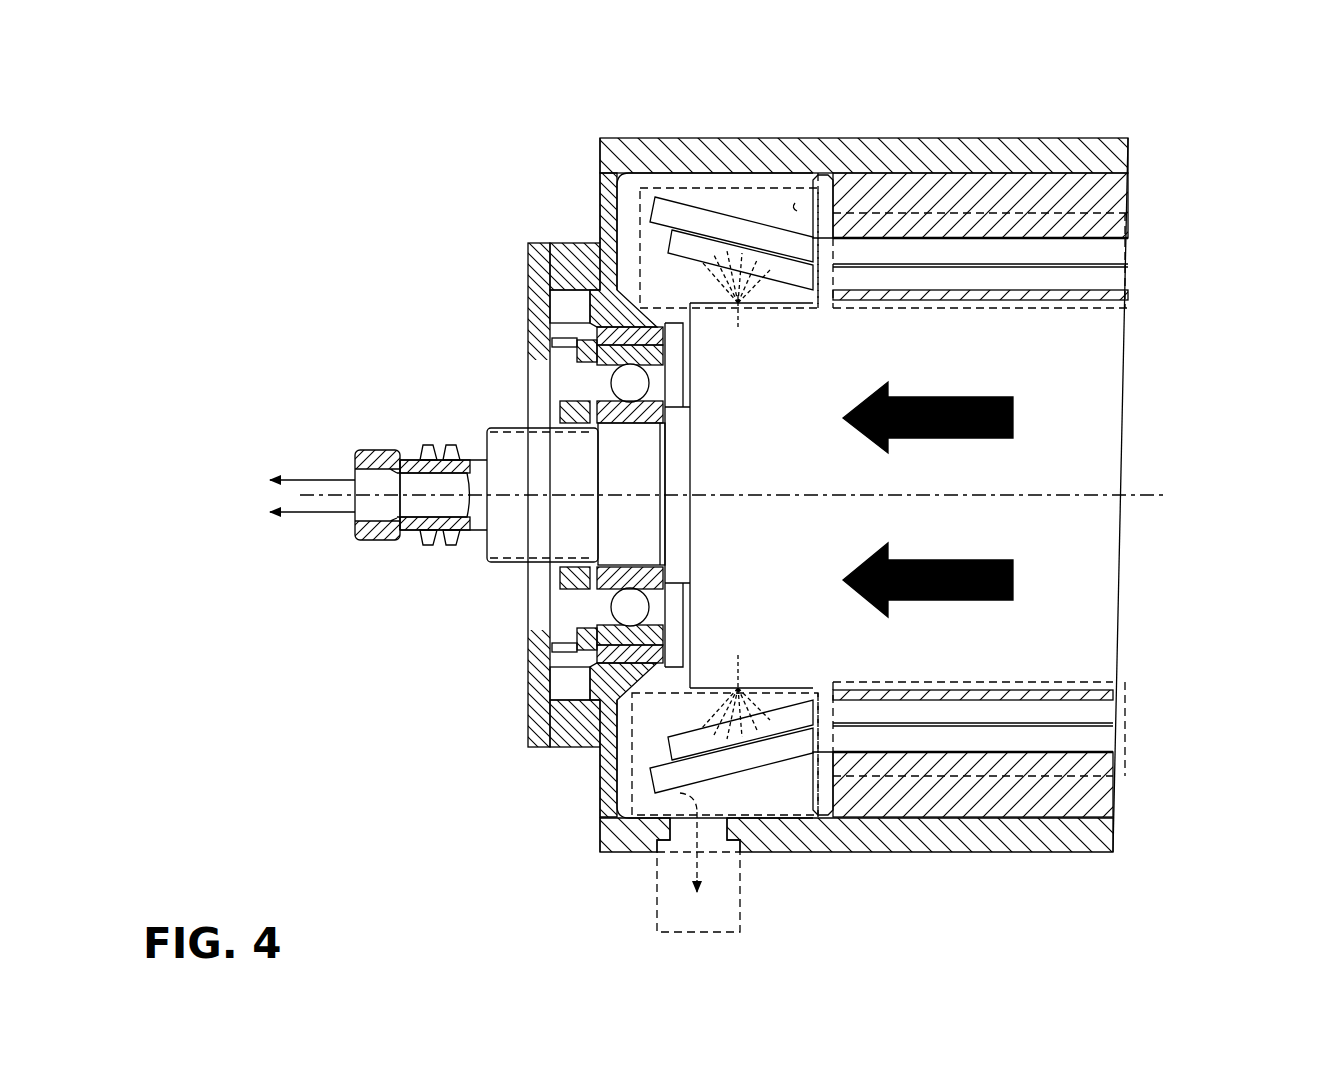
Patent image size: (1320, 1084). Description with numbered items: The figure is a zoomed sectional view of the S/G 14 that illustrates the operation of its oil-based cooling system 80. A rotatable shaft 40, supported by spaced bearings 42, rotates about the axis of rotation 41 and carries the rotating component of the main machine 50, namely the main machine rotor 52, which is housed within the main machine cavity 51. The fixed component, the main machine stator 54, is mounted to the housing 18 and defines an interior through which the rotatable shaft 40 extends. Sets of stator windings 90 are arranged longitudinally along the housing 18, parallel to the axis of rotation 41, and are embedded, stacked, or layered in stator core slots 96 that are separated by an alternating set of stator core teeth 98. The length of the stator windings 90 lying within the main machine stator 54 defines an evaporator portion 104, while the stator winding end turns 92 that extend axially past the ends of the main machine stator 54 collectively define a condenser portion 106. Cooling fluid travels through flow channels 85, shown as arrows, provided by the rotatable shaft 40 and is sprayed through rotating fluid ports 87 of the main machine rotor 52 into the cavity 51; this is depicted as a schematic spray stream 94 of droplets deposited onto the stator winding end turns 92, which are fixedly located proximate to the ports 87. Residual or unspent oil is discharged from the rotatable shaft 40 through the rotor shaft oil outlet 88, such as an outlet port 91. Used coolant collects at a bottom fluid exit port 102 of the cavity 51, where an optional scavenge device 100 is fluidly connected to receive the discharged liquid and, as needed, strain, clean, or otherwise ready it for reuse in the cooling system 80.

The S/G 14 is at (368, 150).
The housing 18 is at (990, 150).
The rotatable shaft 40 is at (410, 532).
The axis of rotation 41 is at (1165, 492).
The bearings 42 is at (625, 382).
The main machine 50 is at (1076, 110).
The main machine cavity 51 is at (795, 203).
The main machine rotor 52 is at (760, 453).
The main machine stator 54 is at (1115, 193).
The cooling system 80 is at (675, 180).
The flow channels 85 is at (937, 400).
The fluid ports 87 is at (750, 312).
The rotor shaft oil outlet 88 is at (300, 478).
The stator windings 90 is at (860, 277).
The outlet port 91 is at (350, 468).
The stator winding end turns 92 is at (733, 247).
The spray stream 94 is at (705, 291).
The stator core slots 96 is at (1102, 246).
The stator core teeth 98 is at (1072, 297).
The scavenge device 100 is at (657, 892).
The bottom fluid exit port 102 is at (676, 808).
The evaporator portion 104 is at (1128, 278).
The condenser portion 106 is at (707, 188).